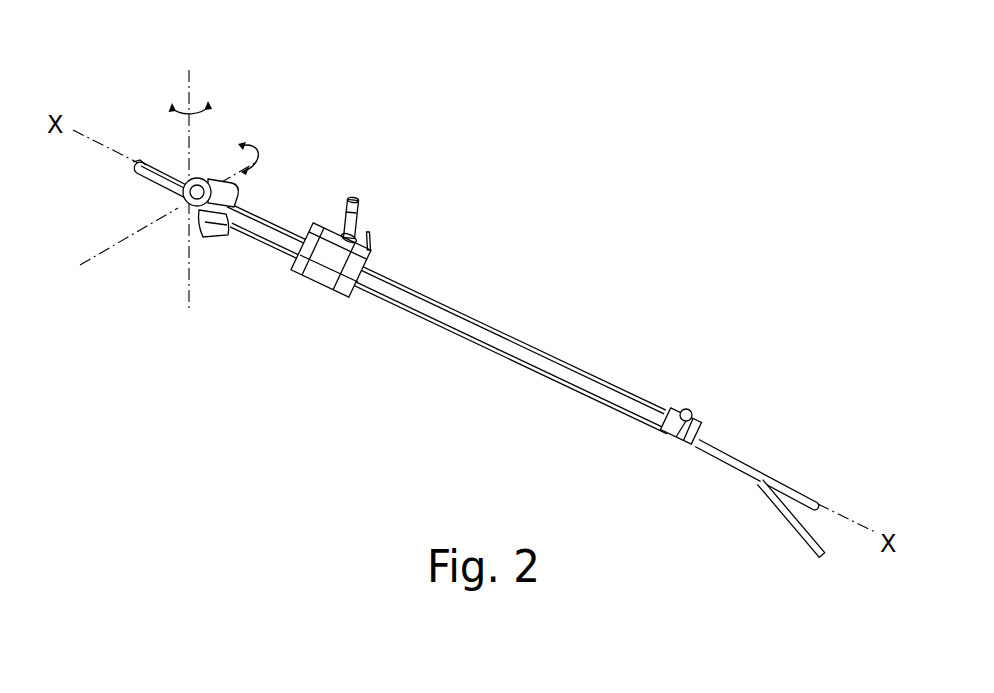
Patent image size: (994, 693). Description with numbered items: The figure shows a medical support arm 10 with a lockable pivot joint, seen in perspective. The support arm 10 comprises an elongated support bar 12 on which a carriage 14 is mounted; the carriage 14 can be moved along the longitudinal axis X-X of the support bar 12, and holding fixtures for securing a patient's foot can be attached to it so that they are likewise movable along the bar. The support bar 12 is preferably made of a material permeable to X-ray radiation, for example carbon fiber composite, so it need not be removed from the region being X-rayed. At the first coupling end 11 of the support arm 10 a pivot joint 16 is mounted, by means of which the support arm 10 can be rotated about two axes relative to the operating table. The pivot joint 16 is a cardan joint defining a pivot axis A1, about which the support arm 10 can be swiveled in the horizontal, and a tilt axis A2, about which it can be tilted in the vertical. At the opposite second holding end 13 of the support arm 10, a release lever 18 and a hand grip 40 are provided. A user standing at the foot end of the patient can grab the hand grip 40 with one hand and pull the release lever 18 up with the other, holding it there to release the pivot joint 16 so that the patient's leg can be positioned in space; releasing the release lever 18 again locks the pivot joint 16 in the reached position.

The support arm 10 is at (495, 325).
The first coupling end 11 is at (145, 147).
The support bar 12 is at (470, 330).
The second holding end 13 is at (722, 403).
The carriage 14 is at (352, 227).
The pivot joint 16 is at (207, 180).
The release lever 18 is at (792, 523).
The hand grip 40 is at (797, 488).
The pivot axis A1 is at (188, 308).
The tilt axis A2 is at (273, 147).